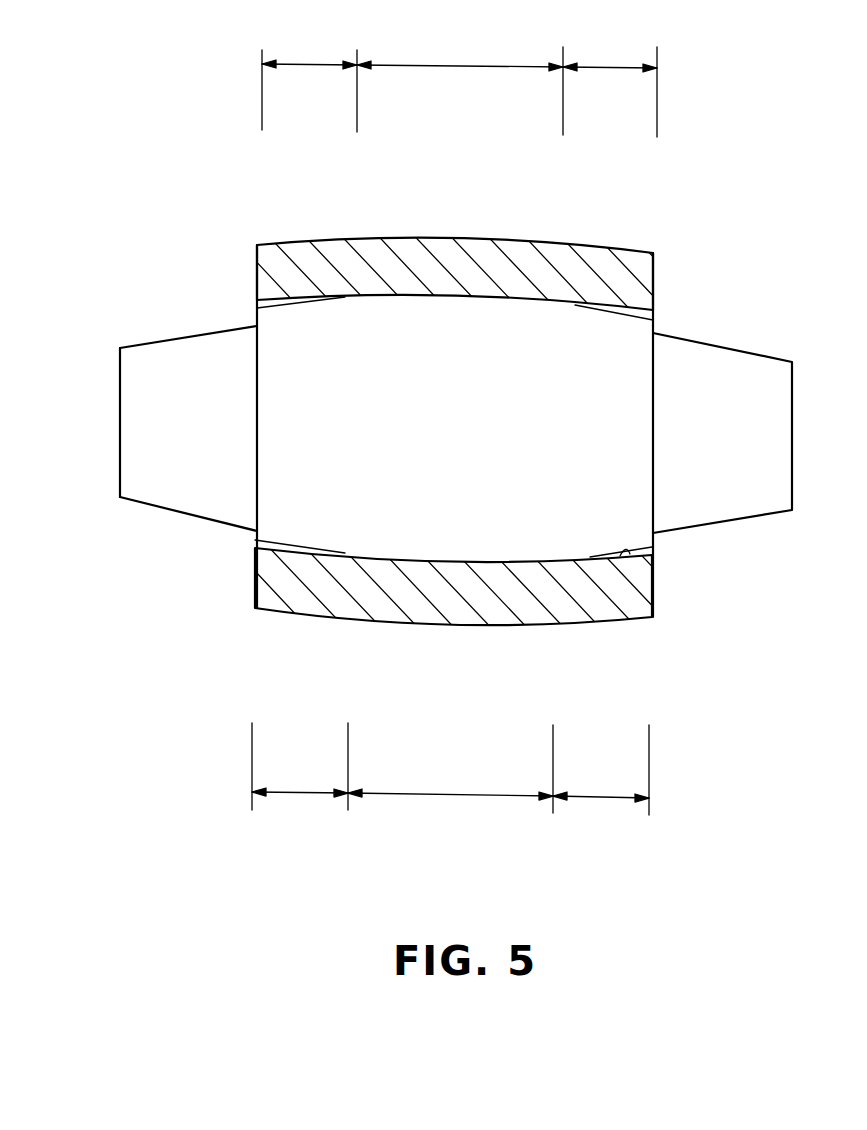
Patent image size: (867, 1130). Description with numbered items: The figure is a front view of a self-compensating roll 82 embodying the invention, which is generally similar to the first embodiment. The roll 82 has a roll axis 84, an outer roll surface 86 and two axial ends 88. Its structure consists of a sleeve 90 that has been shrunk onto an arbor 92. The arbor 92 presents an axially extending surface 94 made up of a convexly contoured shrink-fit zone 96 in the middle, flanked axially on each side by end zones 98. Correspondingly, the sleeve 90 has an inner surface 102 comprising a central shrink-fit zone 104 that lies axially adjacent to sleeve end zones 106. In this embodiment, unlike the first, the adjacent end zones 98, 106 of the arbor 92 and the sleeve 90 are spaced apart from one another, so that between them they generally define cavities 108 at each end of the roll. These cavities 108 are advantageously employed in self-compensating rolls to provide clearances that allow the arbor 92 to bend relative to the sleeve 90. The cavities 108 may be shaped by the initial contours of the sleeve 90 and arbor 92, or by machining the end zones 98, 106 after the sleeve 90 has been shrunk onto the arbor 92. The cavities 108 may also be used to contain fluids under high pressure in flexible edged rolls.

The self-compensating roll 82 is at (185, 335).
The roll axis 84 is at (120, 413).
The roll surface 86 is at (280, 246).
The axial ends 88 is at (257, 275).
The sleeve 90 is at (298, 612).
The arbor 92 is at (285, 309).
The axially extending surface 94 is at (371, 309).
The convexly contoured shrink-fit zone 96 is at (455, 66).
The end zones 98 is at (312, 63).
The inner surface 102 is at (625, 552).
The shrink-fit zone 104 is at (448, 797).
The sleeve end zones 106 is at (300, 795).
The cavities 108 is at (255, 540).